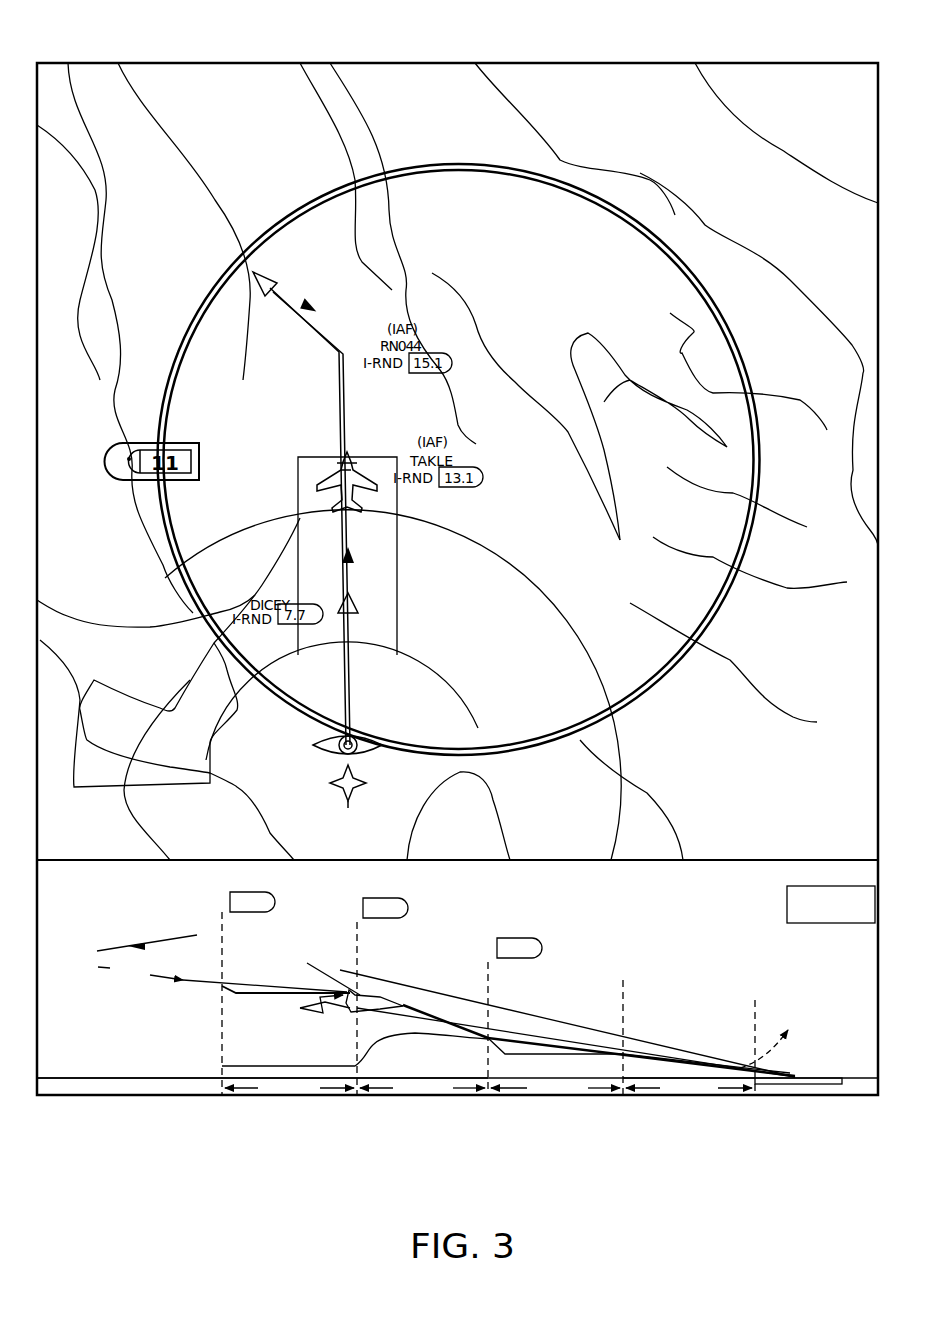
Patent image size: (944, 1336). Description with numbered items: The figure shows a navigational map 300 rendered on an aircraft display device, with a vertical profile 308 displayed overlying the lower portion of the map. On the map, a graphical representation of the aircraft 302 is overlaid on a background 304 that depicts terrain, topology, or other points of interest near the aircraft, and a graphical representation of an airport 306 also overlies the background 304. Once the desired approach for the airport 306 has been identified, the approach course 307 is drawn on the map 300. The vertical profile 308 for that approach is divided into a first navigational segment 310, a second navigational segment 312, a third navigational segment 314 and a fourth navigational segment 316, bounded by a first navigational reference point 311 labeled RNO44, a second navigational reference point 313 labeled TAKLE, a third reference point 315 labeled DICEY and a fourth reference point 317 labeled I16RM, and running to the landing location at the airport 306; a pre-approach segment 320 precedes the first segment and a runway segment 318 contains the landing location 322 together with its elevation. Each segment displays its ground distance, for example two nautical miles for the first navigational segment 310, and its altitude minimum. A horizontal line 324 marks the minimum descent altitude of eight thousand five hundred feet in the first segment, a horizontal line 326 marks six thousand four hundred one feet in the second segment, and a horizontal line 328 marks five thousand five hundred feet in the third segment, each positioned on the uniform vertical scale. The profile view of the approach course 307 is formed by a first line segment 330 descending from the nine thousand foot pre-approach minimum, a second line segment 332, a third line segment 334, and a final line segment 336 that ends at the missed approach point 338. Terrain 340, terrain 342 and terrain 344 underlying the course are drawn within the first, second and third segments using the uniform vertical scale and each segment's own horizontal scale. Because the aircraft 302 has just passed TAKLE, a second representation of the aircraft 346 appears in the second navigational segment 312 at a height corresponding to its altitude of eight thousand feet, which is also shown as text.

The navigational map 300 is at (315, 45).
The aircraft 302 is at (402, 478).
The background 304 is at (457, 461).
The airport 306 is at (338, 748).
The approach course 307 is at (362, 563).
The vertical profile 308 is at (531, 892).
The first navigational segment 310 is at (265, 1100).
The first navigational reference point 311 is at (333, 358).
The second navigational segment 312 is at (432, 1100).
The second navigational reference point 313 is at (322, 450).
The third navigational segment 314 is at (555, 1100).
The third reference point 315 is at (360, 604).
The fourth navigational segment 316 is at (695, 1100).
The fourth reference point 317 is at (357, 725).
The runway segment 318 is at (830, 1100).
The pre-approach segment 320 is at (146, 1100).
The landing location 322 is at (788, 1082).
The horizontal line 324 is at (264, 996).
The horizontal line 326 is at (373, 1048).
The horizontal line 328 is at (597, 1076).
The first line segment 330 is at (265, 985).
The second line segment 332 is at (433, 1017).
The third line segment 334 is at (554, 1041).
The final line segment 336 is at (652, 1062).
The missed approach point 338 is at (722, 1068).
The terrain 340 is at (305, 1078).
The terrain 342 is at (393, 1080).
The terrain 344 is at (222, 930).
The aircraft 346 is at (346, 987).